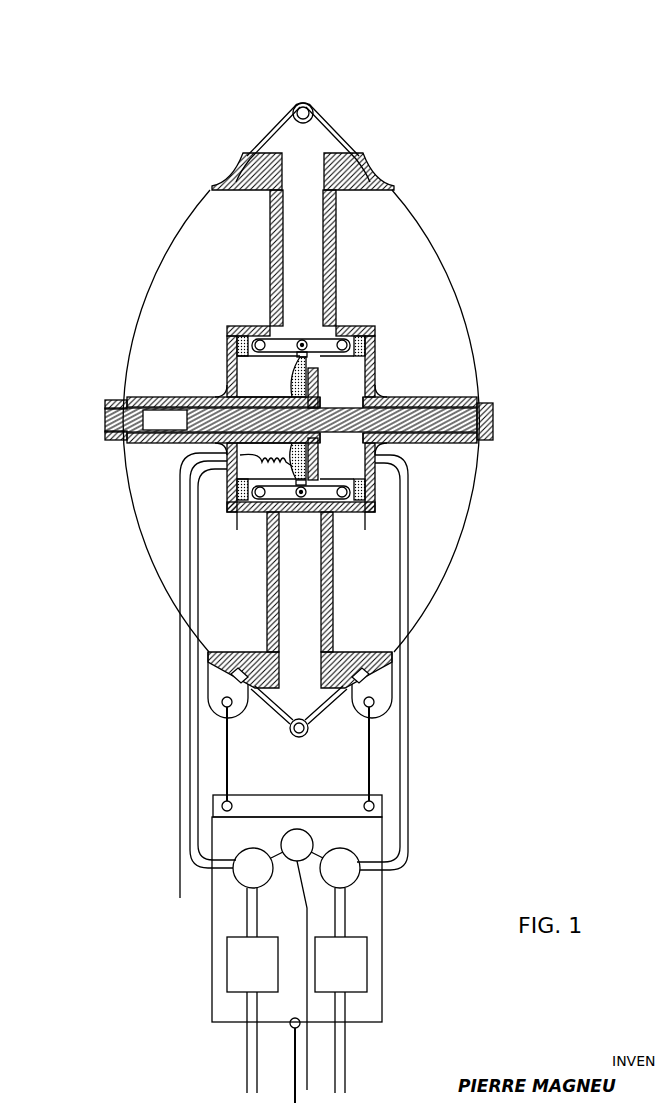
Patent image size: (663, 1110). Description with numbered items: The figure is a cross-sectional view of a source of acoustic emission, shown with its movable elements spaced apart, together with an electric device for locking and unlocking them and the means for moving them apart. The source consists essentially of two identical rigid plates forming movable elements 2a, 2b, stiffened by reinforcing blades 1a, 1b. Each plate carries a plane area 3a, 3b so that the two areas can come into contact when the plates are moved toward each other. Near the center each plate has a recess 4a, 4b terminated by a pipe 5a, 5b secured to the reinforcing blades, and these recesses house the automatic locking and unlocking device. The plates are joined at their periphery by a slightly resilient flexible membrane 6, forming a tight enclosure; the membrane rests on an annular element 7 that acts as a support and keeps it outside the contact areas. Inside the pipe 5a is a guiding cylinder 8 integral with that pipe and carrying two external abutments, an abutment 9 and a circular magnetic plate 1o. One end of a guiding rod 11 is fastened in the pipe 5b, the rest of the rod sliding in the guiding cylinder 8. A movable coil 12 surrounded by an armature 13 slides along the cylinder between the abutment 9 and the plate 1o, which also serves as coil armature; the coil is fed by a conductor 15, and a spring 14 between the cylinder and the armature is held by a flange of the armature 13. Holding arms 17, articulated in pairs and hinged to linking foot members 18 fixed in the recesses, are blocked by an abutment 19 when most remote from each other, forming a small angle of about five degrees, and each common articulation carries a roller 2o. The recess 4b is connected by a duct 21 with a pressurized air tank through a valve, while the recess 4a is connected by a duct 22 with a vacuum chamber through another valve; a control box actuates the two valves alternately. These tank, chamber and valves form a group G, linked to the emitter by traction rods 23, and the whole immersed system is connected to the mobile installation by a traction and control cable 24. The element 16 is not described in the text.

The reinforcing blade 1a is at (213, 213).
The reinforcing blade 1b is at (406, 238).
The movable element 2a is at (240, 168).
The movable element 2b is at (345, 160).
The plane area 3a is at (212, 184).
The plane area 3b is at (352, 222).
The recess 4a is at (238, 397).
The recess 4b is at (372, 383).
The pipe 5a is at (143, 452).
The pipe 5b is at (437, 447).
The flexible membrane 6 is at (268, 126).
The annular element 7 is at (304, 103).
The guiding cylinder 8 is at (128, 398).
The abutment 9 is at (243, 371).
The plate abutment 1o is at (350, 392).
The guiding rod 11 is at (448, 402).
The movable coil 12 is at (292, 343).
The armature 13 is at (298, 368).
The spring 14 is at (215, 447).
The conductor 15 is at (255, 541).
The left bearing block 16 is at (246, 368).
The holding arms 17 is at (257, 343).
The linking foot member 18 is at (346, 337).
The abutment 19 is at (182, 569).
The roller 2o is at (311, 340).
The duct 21 is at (402, 733).
The duct 22 is at (193, 750).
The traction rods 23 is at (372, 772).
The traction and control cable 24 is at (290, 1080).
The group G is at (223, 915).